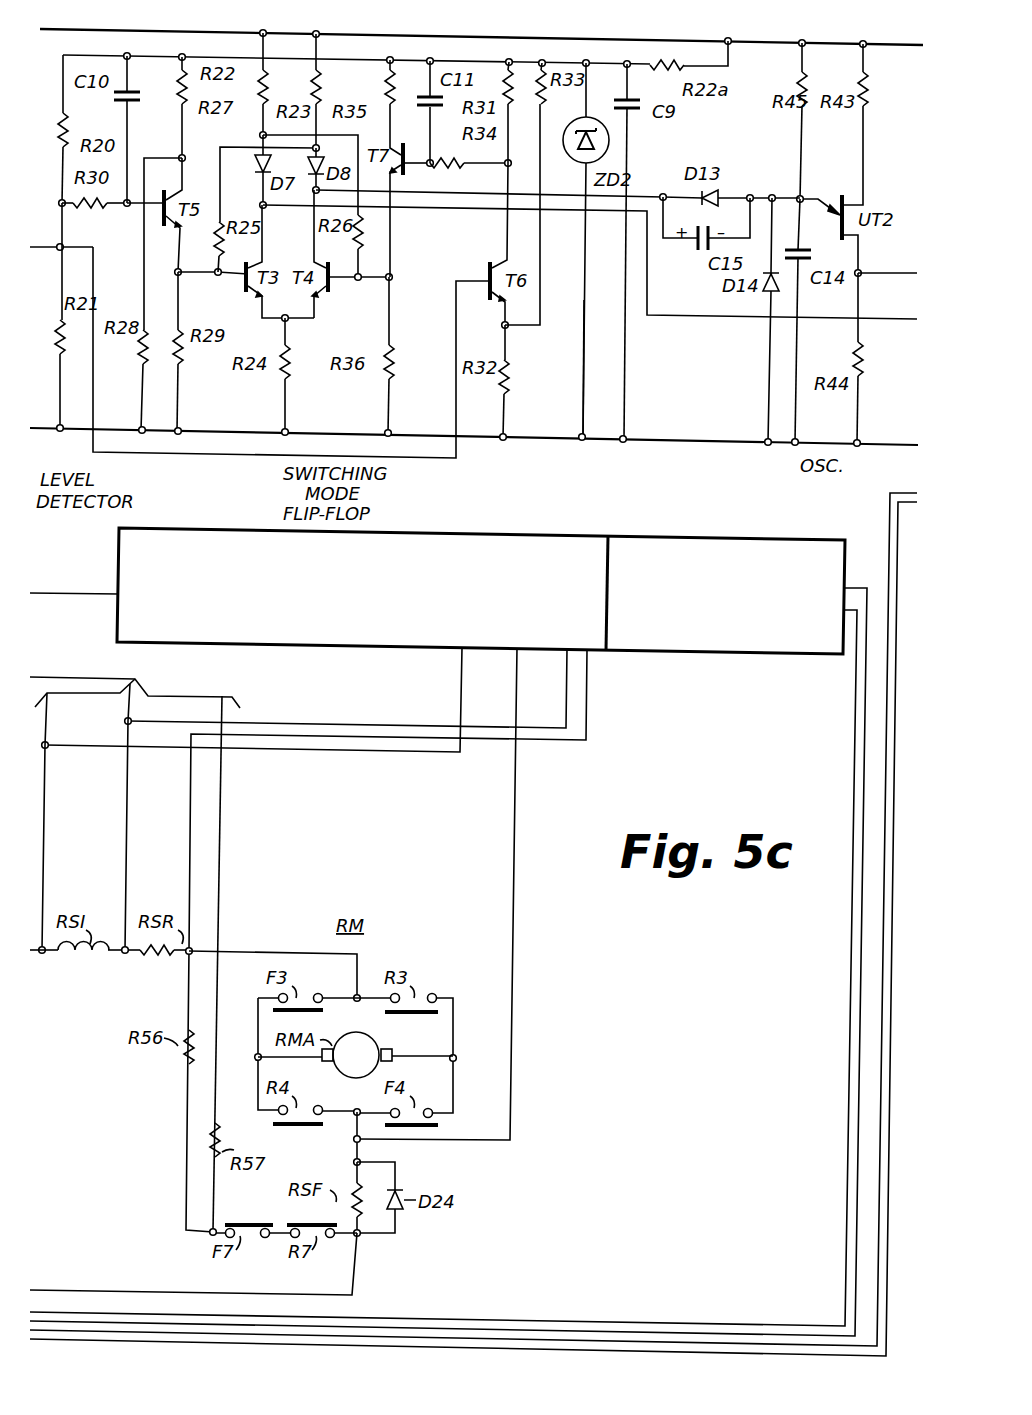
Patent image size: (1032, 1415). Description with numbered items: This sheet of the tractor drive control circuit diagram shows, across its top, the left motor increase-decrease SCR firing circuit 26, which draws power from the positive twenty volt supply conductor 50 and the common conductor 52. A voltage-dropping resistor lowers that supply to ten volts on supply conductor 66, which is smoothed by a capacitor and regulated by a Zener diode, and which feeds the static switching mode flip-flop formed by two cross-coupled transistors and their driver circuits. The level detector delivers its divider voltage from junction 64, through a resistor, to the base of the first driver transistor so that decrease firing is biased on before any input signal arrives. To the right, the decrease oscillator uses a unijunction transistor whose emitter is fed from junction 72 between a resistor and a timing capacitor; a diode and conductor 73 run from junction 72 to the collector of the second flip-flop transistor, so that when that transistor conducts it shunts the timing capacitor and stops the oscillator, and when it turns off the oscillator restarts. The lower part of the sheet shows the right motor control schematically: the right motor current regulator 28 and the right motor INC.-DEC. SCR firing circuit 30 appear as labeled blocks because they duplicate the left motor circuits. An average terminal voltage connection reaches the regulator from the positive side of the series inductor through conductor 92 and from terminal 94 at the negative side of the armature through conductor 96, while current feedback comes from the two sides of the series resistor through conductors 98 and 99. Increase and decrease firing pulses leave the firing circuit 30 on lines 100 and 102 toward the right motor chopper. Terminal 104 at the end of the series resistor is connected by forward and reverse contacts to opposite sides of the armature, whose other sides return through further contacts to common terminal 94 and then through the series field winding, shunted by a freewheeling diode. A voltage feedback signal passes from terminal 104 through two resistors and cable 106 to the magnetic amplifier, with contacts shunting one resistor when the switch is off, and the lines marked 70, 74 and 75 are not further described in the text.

The left motor INC.-DEC. SCR firing circuit 26 is at (481, 24).
The right motor current regulator 28 is at (526, 528).
The right motor INC.-DEC. SCR firing circuit 30 is at (676, 538).
The supply conductor 50 is at (790, 48).
The common conductor 52 is at (708, 446).
The junction 64 is at (60, 247).
The supply conductor 66 is at (122, 54).
The oscillator output line 70 is at (688, 300).
The junction 72 is at (804, 198).
The conductor 73 is at (570, 195).
The line 74 is at (886, 510).
The line 75 is at (886, 532).
The conductor 92 is at (454, 686).
The terminal 94 is at (352, 1140).
The conductor 96 is at (514, 684).
The conductor 98 is at (564, 684).
The conductor 99 is at (586, 694).
The line 100 is at (854, 700).
The line 102 is at (850, 724).
The terminal 104 is at (360, 970).
The cable 106 is at (92, 676).